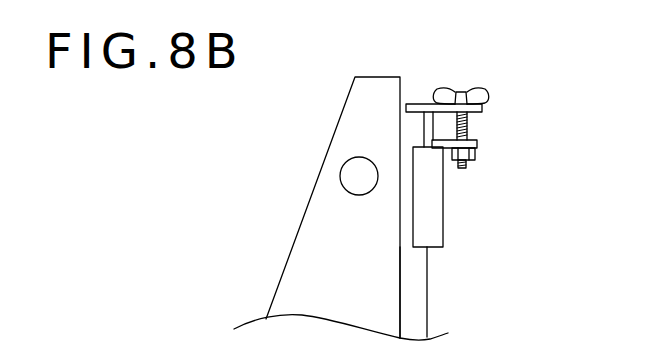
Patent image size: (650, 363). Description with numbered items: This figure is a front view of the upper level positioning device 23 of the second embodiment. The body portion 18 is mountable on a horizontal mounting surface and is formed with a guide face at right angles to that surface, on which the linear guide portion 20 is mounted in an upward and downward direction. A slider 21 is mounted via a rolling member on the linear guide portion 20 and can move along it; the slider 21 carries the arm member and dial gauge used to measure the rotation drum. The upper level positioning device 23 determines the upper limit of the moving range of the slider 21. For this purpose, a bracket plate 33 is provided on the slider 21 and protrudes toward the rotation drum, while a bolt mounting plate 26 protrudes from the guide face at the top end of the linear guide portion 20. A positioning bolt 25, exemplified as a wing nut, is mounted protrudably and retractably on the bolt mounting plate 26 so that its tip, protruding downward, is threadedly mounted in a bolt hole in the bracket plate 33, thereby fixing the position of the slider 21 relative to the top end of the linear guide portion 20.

The body portion 18 is at (367, 105).
The linear guide portion 20 is at (420, 287).
The slider 21 is at (435, 222).
The upper level positioning device 23 is at (555, 78).
The positioning bolt 25 is at (488, 93).
The bolt mounting plate 26 is at (475, 143).
The bracket plate 33 is at (418, 104).